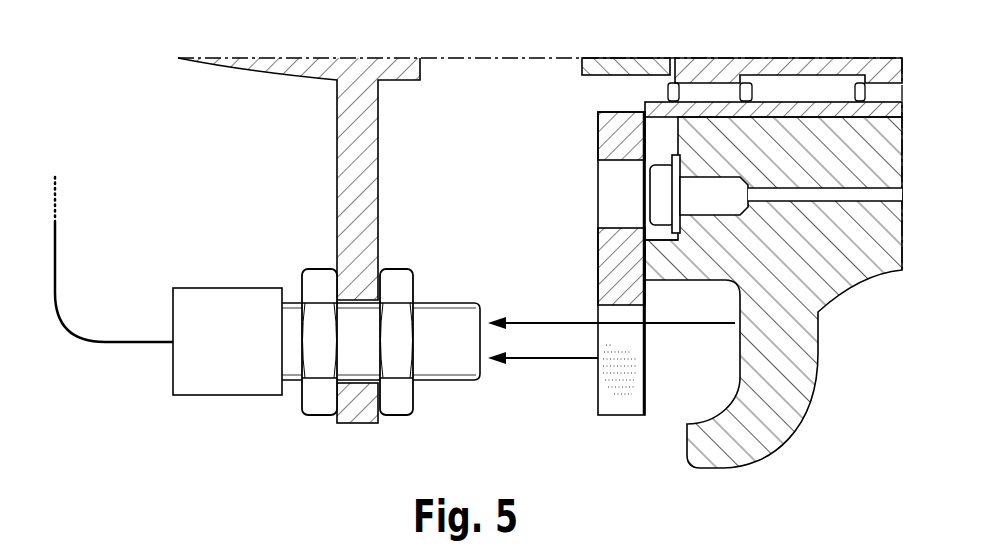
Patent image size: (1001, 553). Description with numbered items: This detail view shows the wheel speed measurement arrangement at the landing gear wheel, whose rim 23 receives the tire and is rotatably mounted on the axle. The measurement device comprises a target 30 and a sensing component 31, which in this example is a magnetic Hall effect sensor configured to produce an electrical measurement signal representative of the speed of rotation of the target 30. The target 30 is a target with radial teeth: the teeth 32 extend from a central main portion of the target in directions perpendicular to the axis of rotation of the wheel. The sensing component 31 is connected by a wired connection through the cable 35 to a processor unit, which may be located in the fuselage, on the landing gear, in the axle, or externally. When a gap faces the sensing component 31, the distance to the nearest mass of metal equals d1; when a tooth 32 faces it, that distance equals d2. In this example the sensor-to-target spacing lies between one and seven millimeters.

The rim 23 is at (775, 442).
The target 30 is at (598, 252).
The sensing component 31 is at (230, 382).
The teeth 32 is at (575, 412).
The cable 35 is at (115, 343).
The distance d1 is at (518, 321).
The distance d2 is at (520, 360).